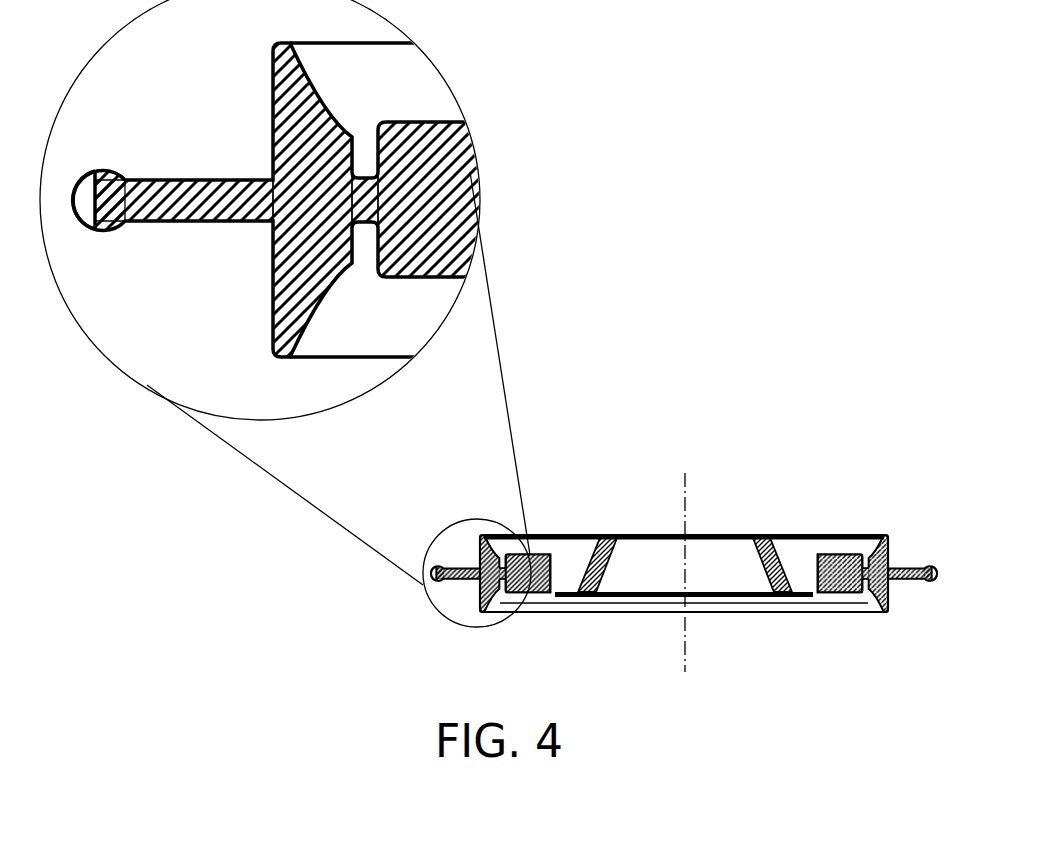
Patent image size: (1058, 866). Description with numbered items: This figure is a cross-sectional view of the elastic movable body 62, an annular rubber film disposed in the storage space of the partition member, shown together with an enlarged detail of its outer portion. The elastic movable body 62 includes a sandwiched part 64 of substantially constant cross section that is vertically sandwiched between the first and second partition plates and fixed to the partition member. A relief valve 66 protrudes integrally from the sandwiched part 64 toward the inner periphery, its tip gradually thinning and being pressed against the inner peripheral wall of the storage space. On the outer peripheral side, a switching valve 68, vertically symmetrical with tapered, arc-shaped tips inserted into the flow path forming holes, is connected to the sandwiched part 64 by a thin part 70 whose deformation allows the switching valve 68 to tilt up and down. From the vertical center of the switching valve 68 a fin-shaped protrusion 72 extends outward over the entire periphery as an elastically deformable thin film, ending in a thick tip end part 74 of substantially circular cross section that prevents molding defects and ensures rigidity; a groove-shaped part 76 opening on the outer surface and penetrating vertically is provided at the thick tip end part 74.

The elastic movable body 62 is at (876, 476).
The sandwiched part 64 is at (423, 162).
The relief valve 66 is at (765, 558).
The switching valve 68 is at (290, 281).
The thin part 70 is at (365, 202).
The fin-shaped protrusion 72 is at (212, 200).
The thick tip end part 74 is at (103, 177).
The groove-shaped part 76 is at (83, 219).